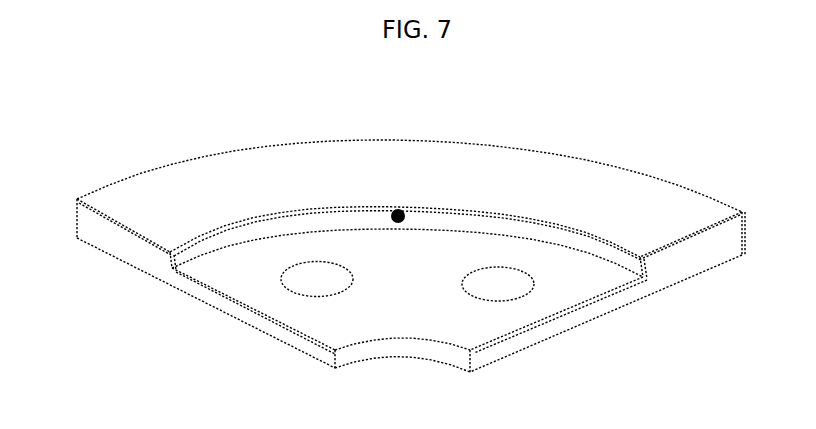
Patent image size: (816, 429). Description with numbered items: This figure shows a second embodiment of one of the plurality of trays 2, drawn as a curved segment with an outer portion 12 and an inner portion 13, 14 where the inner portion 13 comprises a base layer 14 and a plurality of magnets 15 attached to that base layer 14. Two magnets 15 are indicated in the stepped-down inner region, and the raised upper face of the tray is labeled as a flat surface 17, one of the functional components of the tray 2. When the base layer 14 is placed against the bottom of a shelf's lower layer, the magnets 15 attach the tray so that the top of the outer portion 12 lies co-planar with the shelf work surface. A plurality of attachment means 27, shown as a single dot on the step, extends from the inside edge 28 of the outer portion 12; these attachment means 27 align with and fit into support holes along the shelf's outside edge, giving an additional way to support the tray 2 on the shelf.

The tray 2 is at (412, 243).
The outer portion 12 is at (75, 240).
The inner portion 13 is at (607, 297).
The base layer 14 is at (470, 371).
The plurality of magnets 15 is at (482, 290).
The flat surface 17 is at (571, 183).
The attachment means 27 is at (405, 209).
The inside edge 28 is at (177, 254).